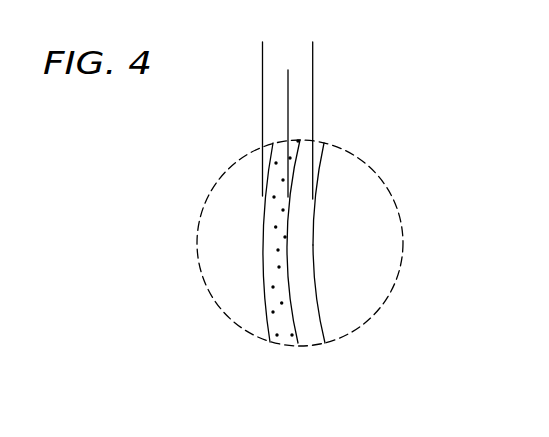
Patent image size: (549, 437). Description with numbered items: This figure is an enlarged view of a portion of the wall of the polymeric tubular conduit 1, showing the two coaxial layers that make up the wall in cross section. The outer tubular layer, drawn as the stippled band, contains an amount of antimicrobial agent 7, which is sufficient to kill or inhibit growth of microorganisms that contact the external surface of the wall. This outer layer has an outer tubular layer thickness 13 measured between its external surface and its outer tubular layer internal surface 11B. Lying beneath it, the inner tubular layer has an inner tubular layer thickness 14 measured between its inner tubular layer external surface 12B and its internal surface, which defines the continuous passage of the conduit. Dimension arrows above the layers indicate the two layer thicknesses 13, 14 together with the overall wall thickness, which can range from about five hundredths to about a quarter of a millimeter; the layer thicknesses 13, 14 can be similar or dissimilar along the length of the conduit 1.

The polymeric tubular conduit 1 is at (248, 215).
The outer tubular layer thickness 13 is at (225, 83).
The inner tubular layer thickness 14 is at (251, 108).
The outer tubular layer internal surface 11B is at (287, 232).
The antimicrobial agent 7 is at (267, 275).
The inner tubular layer external surface 12B is at (290, 284).